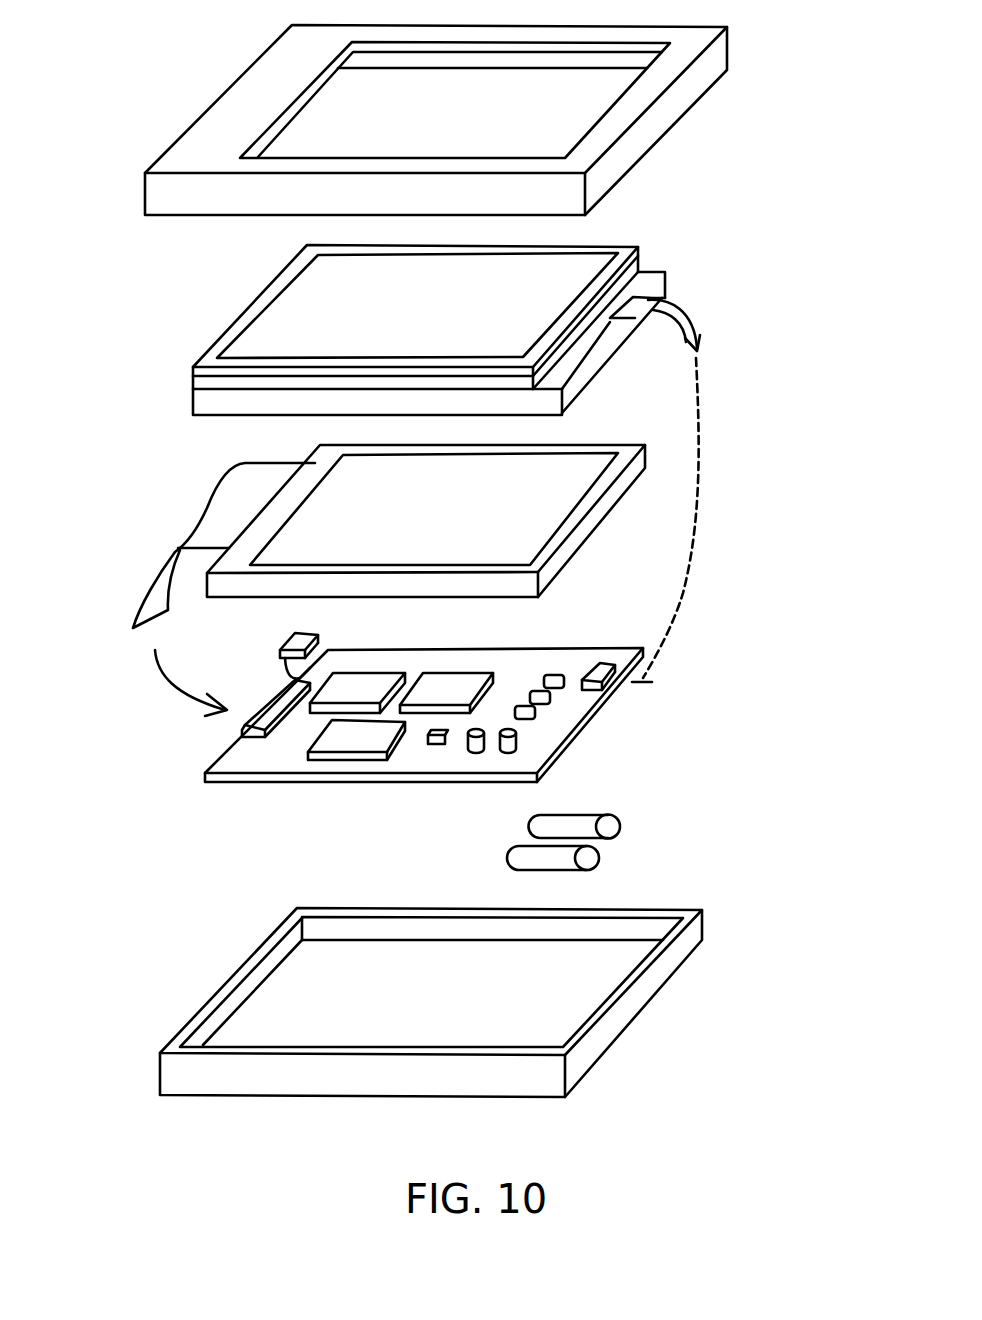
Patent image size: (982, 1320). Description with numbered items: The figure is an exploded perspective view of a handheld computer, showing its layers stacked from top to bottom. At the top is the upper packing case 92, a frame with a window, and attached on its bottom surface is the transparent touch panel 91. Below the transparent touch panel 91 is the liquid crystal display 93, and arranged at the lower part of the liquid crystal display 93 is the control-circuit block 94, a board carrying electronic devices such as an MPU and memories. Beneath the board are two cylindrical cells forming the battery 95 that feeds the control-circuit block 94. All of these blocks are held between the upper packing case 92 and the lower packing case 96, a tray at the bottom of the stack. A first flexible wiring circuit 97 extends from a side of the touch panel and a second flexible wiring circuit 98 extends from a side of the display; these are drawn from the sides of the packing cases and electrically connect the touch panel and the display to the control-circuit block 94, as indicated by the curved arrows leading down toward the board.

The transparent touch panel 91 is at (672, 268).
The upper packing case 92 is at (700, 75).
The liquid crystal display 93 is at (638, 477).
The control-circuit block 94 is at (603, 707).
The battery 95 is at (600, 858).
The lower packing case 96 is at (677, 972).
The first flexible wiring circuit 97 is at (693, 320).
The second flexible wiring circuit 98 is at (207, 515).